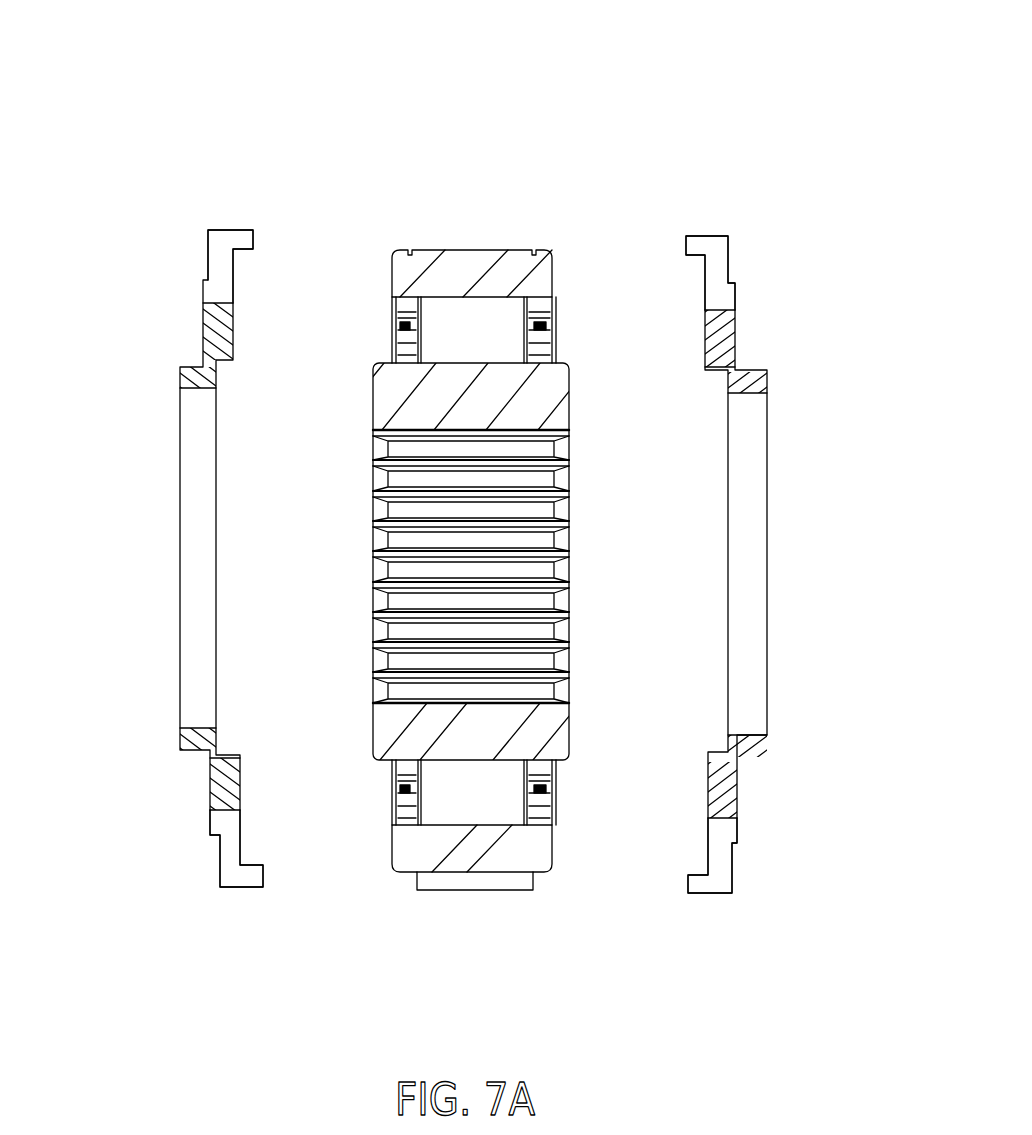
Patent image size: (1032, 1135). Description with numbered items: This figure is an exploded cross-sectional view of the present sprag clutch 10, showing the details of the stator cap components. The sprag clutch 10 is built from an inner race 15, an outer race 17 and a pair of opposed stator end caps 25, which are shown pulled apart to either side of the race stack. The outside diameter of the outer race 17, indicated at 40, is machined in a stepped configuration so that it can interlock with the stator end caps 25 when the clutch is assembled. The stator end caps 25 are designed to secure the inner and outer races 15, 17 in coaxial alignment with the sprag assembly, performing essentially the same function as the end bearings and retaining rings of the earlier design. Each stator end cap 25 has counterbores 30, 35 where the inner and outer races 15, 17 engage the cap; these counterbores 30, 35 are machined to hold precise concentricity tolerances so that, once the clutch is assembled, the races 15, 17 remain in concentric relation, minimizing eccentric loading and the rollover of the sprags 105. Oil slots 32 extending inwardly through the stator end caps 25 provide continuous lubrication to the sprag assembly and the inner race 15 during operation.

The sprag clutch 10 is at (500, 88).
The inner race 15 is at (502, 420).
The outer race 17 is at (527, 857).
The stator end caps 25 is at (157, 543).
The counterbore 30 is at (222, 372).
The oil slots 32 is at (717, 267).
The counterbore 35 is at (240, 260).
The stepped outside diameter of outer race 40 is at (413, 250).
The sprags 105 is at (505, 352).